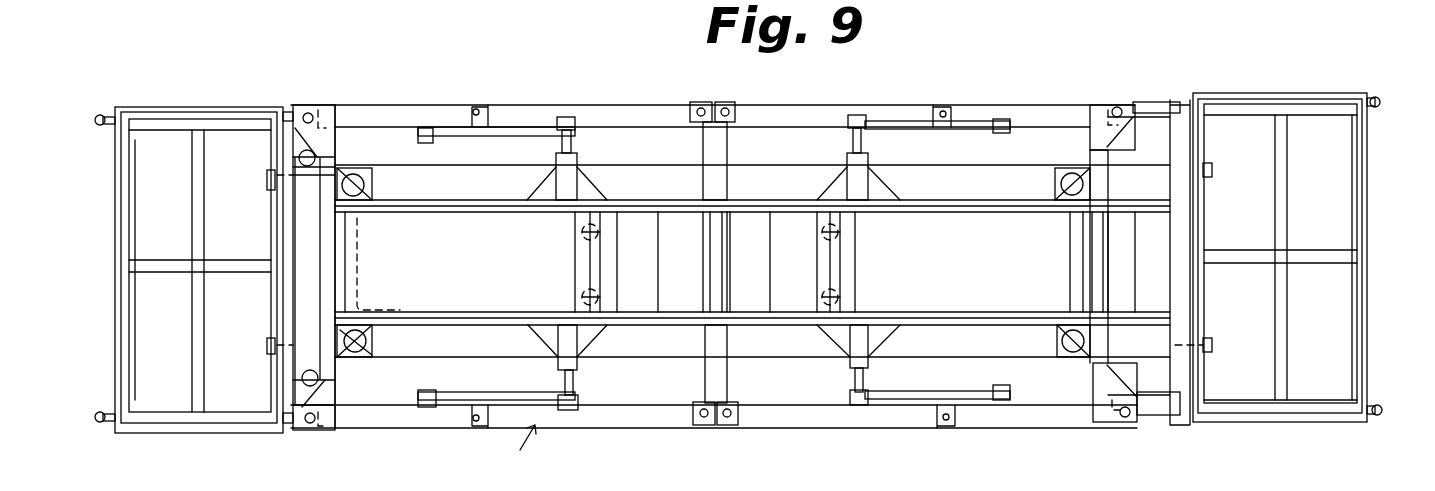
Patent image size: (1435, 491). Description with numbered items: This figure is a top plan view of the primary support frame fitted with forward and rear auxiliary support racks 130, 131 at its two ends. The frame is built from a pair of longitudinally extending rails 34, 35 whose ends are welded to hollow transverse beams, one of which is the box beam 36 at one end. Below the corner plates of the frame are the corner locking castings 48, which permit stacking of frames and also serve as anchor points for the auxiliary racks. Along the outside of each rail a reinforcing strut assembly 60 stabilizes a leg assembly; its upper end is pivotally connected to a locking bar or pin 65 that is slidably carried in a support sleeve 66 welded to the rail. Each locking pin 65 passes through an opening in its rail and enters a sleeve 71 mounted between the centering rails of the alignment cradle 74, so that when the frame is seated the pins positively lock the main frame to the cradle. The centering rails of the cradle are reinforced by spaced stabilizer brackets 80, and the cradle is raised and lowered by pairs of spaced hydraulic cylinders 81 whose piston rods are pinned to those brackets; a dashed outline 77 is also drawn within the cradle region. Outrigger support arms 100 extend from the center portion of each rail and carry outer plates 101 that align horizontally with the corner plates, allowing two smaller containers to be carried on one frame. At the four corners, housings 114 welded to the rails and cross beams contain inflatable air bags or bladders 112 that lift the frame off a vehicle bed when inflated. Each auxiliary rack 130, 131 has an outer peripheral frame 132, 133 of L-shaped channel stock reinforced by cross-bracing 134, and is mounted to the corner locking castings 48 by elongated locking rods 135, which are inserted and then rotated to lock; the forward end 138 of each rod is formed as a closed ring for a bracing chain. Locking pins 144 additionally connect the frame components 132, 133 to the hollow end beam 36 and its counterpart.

The longitudinally extending rail 34 is at (1020, 219).
The longitudinally extending rail 35 is at (1008, 303).
The hollow transverse beam 36 is at (1182, 225).
The corner locking casting 48 is at (336, 103).
The reinforcing strut assembly 60 is at (470, 78).
The locking bar or pin 65 is at (578, 142).
The support sleeve 66 is at (578, 180).
The sleeve 71 is at (578, 252).
The alignment cradle 74 is at (651, 371).
The deck panel outline 77 is at (352, 250).
The stabilizer bracket 80 is at (600, 262).
The hydraulic cylinder 81 is at (580, 233).
The outrigger support arm 100 is at (703, 142).
The outer plate 101 is at (703, 105).
The inflatable air bag or bladder 112 is at (362, 328).
The housing 114 is at (378, 185).
The forward auxiliary support rack 130 is at (1384, 295).
The rear auxiliary support rack 131 is at (185, 449).
The outer peripheral frame 132 is at (1365, 197).
The outer peripheral frame 133 is at (128, 203).
The cross-bracing 134 is at (215, 275).
The elongated locking rod 135 is at (288, 107).
The forward end of locking rod 138 is at (1375, 98).
The locking pin 144 is at (268, 185).